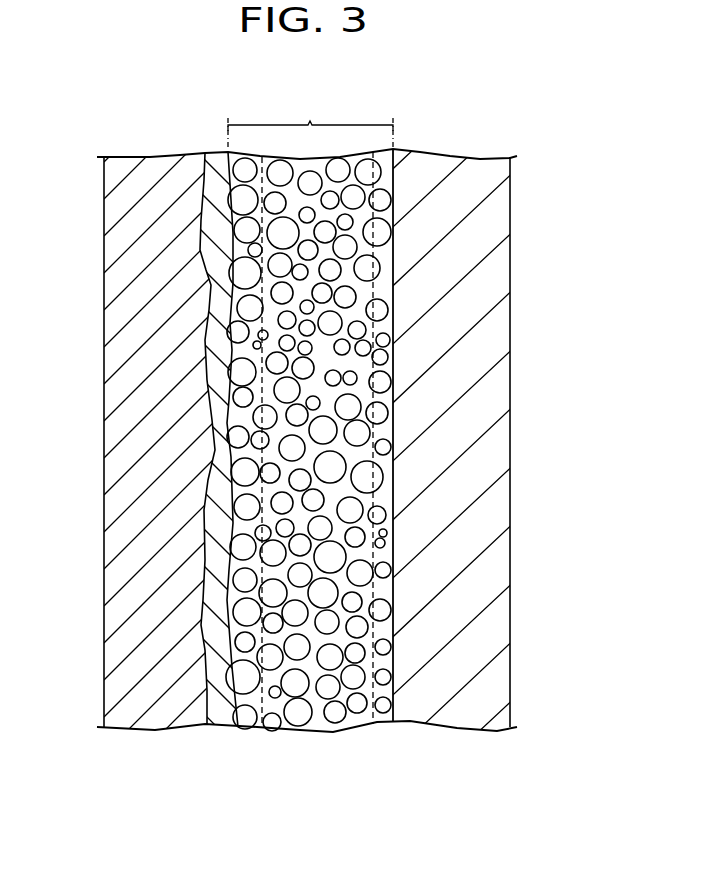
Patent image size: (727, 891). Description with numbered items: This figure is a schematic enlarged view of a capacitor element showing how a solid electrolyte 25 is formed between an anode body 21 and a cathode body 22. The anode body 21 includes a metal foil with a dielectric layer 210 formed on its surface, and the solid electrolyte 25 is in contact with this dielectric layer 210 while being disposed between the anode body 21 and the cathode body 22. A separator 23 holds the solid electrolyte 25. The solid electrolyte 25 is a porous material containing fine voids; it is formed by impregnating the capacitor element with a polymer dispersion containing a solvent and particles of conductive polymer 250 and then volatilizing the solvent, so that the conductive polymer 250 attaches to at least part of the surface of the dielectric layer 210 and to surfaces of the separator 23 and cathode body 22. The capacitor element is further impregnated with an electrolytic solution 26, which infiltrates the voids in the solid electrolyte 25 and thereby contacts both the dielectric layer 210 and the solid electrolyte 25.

The anode body 21 is at (108, 437).
The cathode body 22 is at (500, 627).
The separator 23 is at (375, 710).
The solid electrolyte 25 is at (310, 122).
The electrolytic solution 26 is at (277, 720).
The dielectric layer 210 is at (213, 718).
The conductive polymer 250 is at (332, 718).